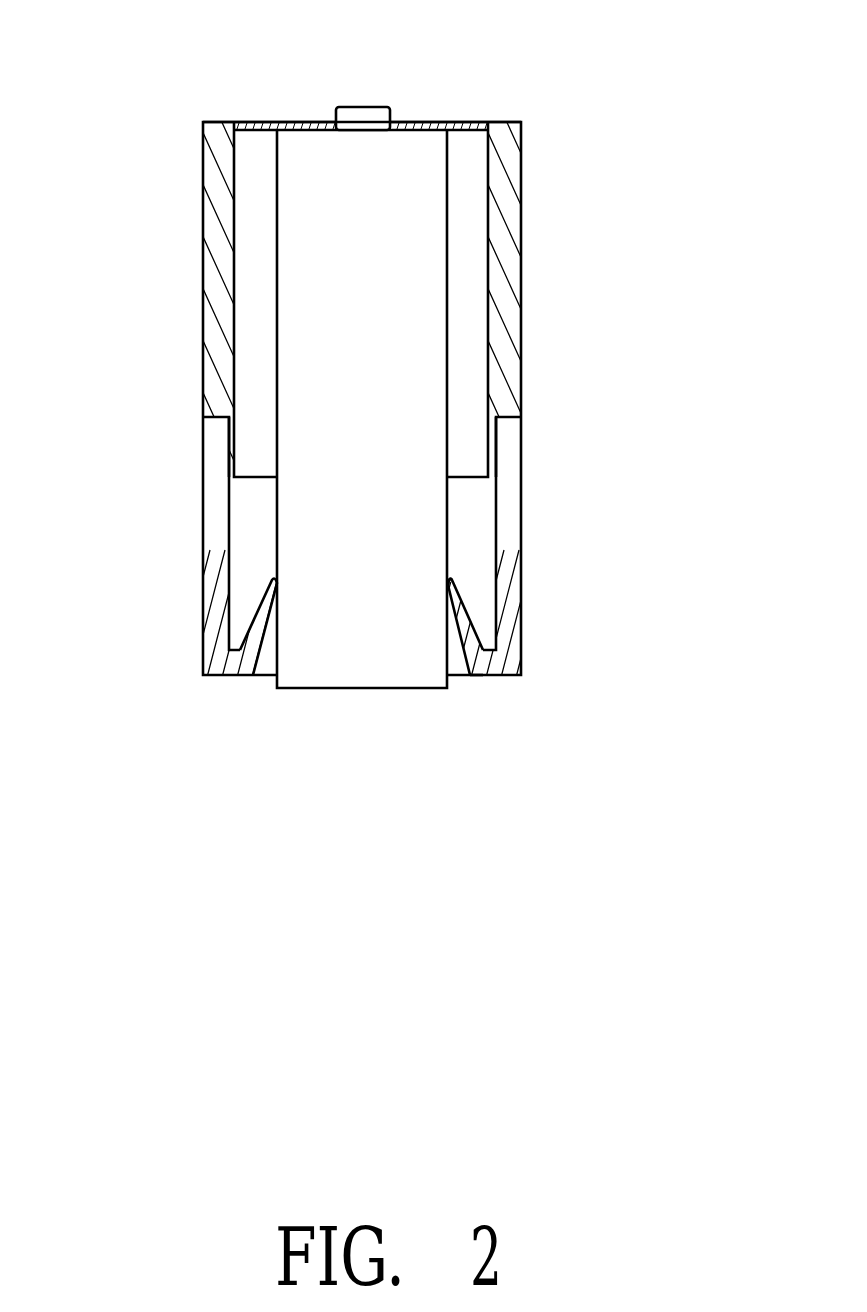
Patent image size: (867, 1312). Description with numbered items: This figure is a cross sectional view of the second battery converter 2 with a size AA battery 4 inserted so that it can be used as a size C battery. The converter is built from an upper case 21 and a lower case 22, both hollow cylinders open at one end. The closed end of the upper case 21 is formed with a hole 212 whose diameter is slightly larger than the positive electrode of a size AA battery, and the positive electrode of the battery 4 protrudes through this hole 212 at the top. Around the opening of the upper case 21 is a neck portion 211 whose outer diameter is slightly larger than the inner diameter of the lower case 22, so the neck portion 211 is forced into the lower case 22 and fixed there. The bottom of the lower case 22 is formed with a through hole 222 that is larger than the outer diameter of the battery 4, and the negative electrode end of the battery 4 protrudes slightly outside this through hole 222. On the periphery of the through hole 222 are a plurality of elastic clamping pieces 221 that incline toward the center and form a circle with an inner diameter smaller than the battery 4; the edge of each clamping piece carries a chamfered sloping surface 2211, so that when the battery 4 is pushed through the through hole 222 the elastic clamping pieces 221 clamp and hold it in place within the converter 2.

The second battery converter 2 is at (548, 210).
The upper case 21 is at (508, 367).
The neck portion 211 is at (495, 457).
The hole 212 is at (395, 118).
The lower case 22 is at (507, 563).
The elastic clamping pieces 221 is at (477, 633).
The chamfered sloping surface 2211 is at (447, 590).
The through hole 222 is at (458, 672).
The size AA battery 4 is at (320, 552).